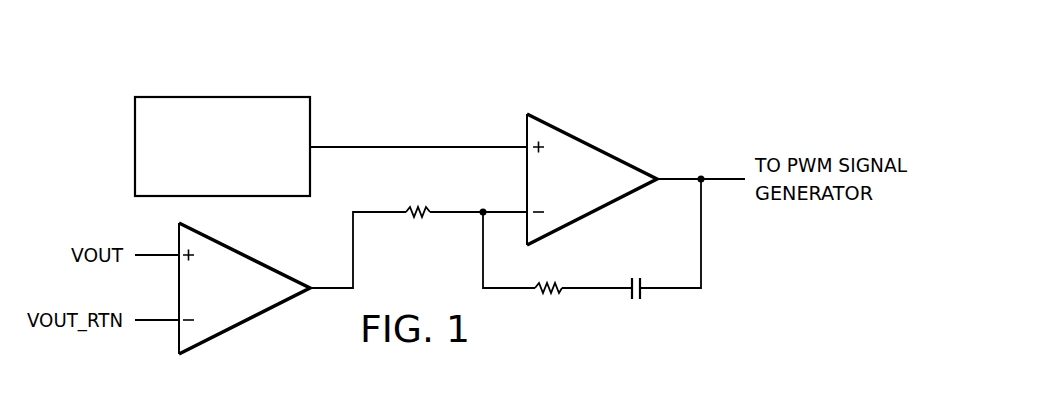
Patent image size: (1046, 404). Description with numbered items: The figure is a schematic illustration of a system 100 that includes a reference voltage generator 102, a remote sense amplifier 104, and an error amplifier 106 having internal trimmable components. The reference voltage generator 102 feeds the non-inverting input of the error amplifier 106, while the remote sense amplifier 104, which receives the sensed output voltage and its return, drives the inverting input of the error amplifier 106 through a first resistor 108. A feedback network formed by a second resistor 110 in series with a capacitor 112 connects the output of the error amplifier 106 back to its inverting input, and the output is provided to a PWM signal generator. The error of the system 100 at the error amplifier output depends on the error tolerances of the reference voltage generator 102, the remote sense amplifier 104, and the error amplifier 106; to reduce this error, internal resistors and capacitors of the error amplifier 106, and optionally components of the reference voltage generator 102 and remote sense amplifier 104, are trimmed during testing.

The system 100 is at (713, 70).
The reference voltage generator 102 is at (135, 133).
The remote sense amplifier 104 is at (247, 323).
The error amplifier 106 is at (592, 143).
The first resistor 108 is at (415, 218).
The second resistor 110 is at (550, 295).
The capacitor 112 is at (635, 303).